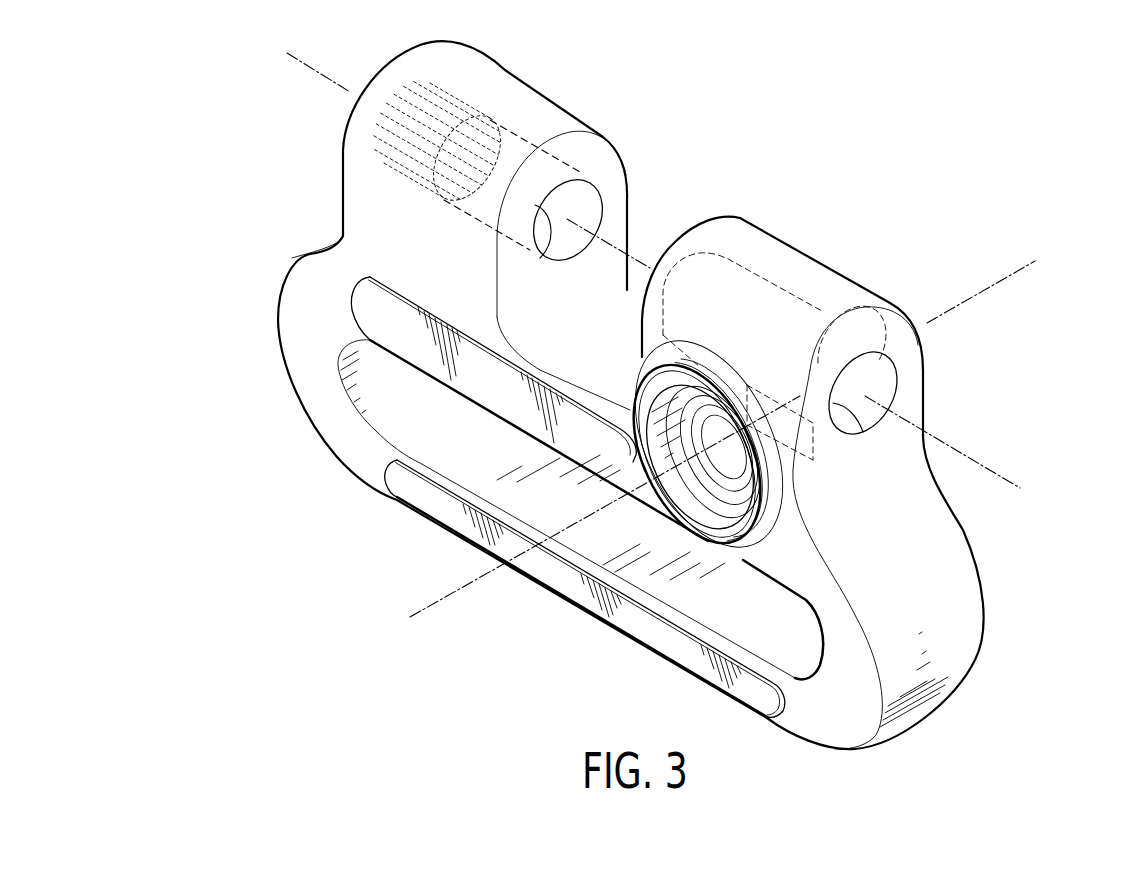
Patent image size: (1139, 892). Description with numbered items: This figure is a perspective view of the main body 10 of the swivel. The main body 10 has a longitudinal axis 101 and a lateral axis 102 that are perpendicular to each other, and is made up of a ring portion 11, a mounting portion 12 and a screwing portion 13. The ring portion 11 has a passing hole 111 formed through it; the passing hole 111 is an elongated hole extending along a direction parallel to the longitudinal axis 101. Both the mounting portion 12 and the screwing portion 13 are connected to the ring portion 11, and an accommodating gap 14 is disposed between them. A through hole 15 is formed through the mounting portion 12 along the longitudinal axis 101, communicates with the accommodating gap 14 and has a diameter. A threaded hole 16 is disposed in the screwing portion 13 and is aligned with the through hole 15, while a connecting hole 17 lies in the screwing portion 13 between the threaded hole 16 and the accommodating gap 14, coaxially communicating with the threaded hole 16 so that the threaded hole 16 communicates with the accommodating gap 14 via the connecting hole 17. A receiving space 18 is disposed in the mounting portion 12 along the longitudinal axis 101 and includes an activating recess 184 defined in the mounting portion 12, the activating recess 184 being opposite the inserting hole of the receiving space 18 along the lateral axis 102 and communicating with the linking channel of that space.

The main body 10 is at (1017, 645).
The ring portion 11 is at (273, 297).
The passing hole 111 is at (461, 468).
The mounting portion 12 is at (763, 240).
The screwing portion 13 is at (497, 90).
The accommodating gap 14 is at (588, 336).
The through hole 15 is at (864, 397).
The threaded hole 16 is at (387, 143).
The connecting hole 17 is at (543, 250).
The receiving space 18 is at (770, 523).
The activating recess 184 is at (713, 513).
The longitudinal axis 101 is at (987, 465).
The lateral axis 102 is at (1025, 265).